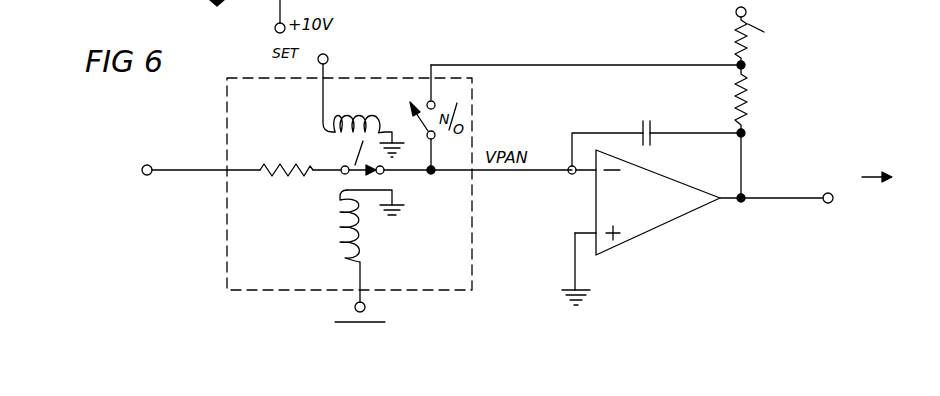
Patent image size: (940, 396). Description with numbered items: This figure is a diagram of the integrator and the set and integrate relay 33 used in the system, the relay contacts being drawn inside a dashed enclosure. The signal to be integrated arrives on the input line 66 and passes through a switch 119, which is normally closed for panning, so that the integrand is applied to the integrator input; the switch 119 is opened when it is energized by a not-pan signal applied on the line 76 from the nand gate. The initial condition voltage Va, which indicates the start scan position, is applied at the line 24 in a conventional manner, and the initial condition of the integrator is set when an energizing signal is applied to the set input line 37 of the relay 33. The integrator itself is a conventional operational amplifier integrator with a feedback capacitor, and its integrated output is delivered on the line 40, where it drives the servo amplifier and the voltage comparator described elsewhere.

The line 24 is at (734, 12).
The set and integrate relay 33 is at (220, 104).
The set input line 37 is at (325, 72).
The line 40 is at (803, 200).
The input line 66 is at (180, 173).
The line 76 is at (366, 297).
The switch 119 is at (360, 174).